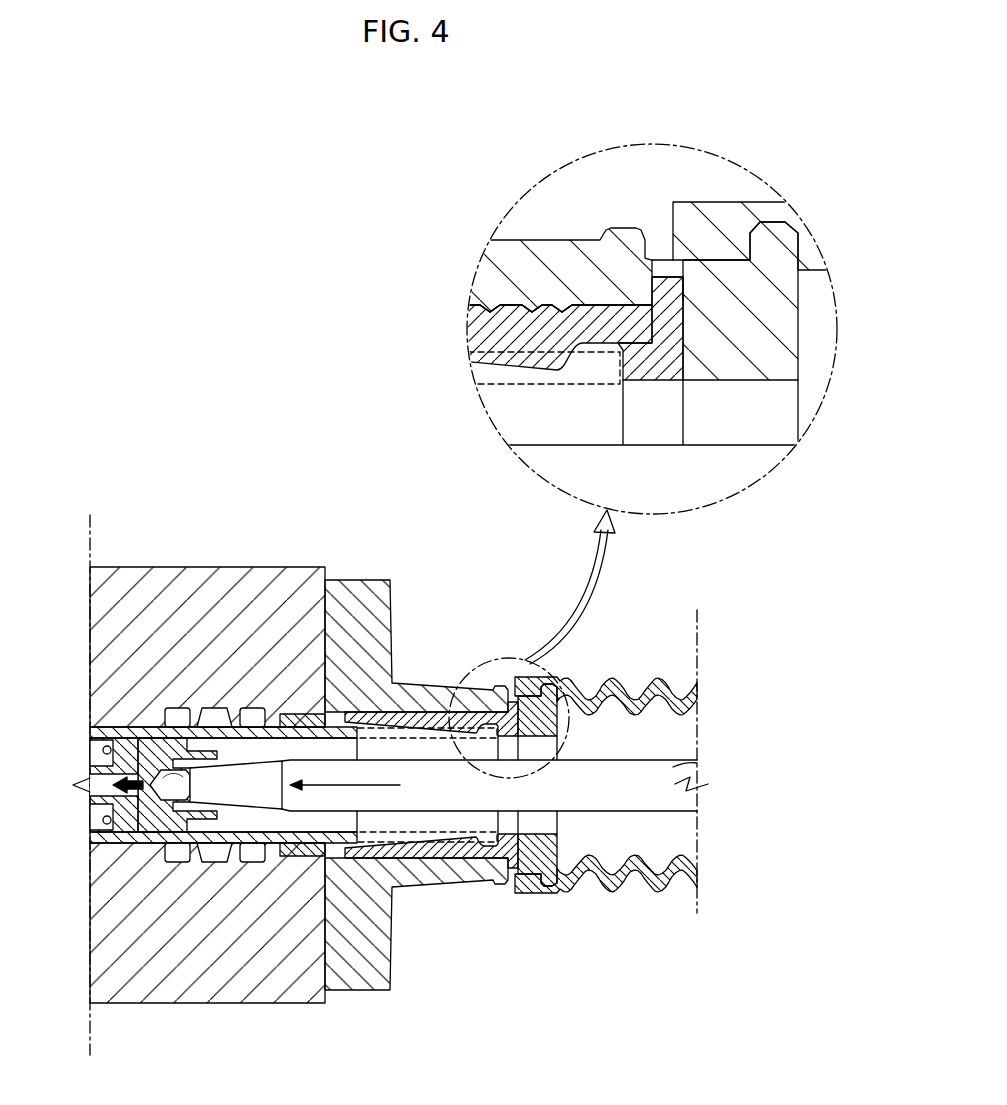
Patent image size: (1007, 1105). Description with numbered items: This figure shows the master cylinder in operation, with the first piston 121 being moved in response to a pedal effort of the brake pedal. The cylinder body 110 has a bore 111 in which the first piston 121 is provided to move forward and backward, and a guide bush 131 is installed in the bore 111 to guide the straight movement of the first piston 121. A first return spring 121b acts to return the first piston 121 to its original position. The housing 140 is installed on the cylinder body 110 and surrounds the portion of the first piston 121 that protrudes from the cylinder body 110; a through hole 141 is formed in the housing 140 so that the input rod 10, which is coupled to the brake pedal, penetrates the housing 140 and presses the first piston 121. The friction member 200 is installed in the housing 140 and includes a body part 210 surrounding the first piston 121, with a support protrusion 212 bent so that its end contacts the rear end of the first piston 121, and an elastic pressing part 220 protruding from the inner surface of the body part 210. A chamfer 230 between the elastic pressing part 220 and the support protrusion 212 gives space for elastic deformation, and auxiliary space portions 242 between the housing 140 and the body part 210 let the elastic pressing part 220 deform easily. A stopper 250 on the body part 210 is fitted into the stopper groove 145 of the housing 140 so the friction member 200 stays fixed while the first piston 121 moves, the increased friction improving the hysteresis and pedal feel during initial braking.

The input rod 10 is at (673, 768).
The cylinder body 110 is at (196, 580).
The bore 111 is at (133, 727).
The first piston 121 is at (127, 835).
The first return spring 121b is at (104, 750).
The guide bush 131 is at (306, 714).
The housing 140 is at (359, 580).
The through hole 141 is at (558, 740).
The stopper groove 145 is at (693, 250).
The friction member 200 is at (475, 860).
The body part 210 is at (480, 327).
The support protrusion 212 is at (655, 382).
The elastic pressing part 220 is at (473, 303).
The chamfer 230 is at (597, 360).
The auxiliary space portions 242 is at (562, 312).
The stopper 250 is at (662, 288).